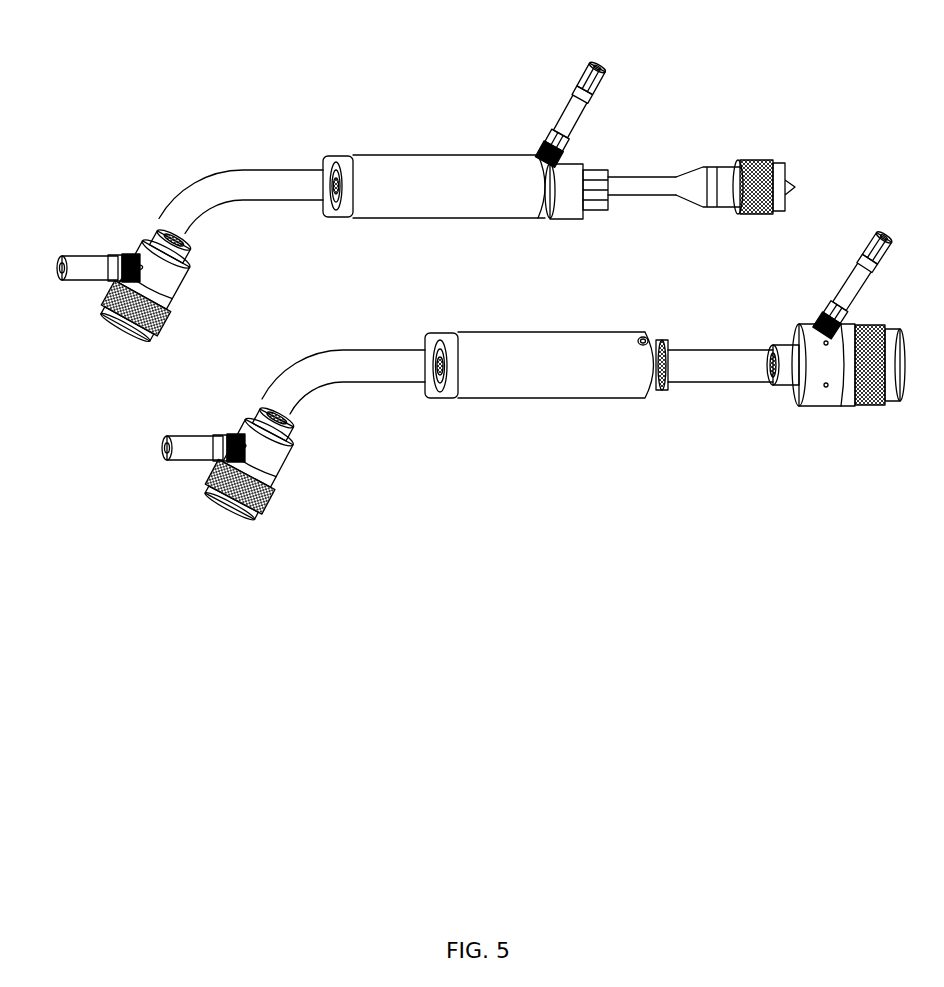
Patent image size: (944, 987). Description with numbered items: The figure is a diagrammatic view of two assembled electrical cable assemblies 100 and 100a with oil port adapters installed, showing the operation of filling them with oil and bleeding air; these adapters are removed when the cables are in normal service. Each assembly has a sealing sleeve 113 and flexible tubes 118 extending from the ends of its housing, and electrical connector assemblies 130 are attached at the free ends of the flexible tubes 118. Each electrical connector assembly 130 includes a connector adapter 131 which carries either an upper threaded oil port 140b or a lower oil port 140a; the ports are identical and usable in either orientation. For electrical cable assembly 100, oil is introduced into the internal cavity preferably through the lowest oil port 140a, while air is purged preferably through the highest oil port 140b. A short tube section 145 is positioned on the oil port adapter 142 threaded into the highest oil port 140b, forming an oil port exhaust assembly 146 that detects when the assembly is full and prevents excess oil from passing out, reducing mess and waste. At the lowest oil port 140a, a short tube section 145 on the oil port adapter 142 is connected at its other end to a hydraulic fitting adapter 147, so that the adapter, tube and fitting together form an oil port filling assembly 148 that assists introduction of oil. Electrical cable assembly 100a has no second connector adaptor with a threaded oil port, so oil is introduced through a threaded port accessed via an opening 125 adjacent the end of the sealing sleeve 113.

The electrical cable assembly 100 is at (623, 455).
The electrical cable assembly 100a is at (582, 118).
The sealing sleeve 113 is at (488, 320).
The flexible tube 118 is at (466, 318).
The opening 125 is at (632, 135).
The electrical connector assembly 130 is at (464, 311).
The connector adapter 131 is at (500, 379).
The lower oil port 140a is at (688, 240).
The upper threaded oil port 140b is at (452, 293).
The oil port adapter 142 is at (459, 267).
The short tube section 145 is at (464, 243).
The oil port exhaust assembly 146 is at (120, 417).
The hydraulic fitting adapter 147 is at (711, 144).
The oil port filling assembly 148 is at (754, 109).